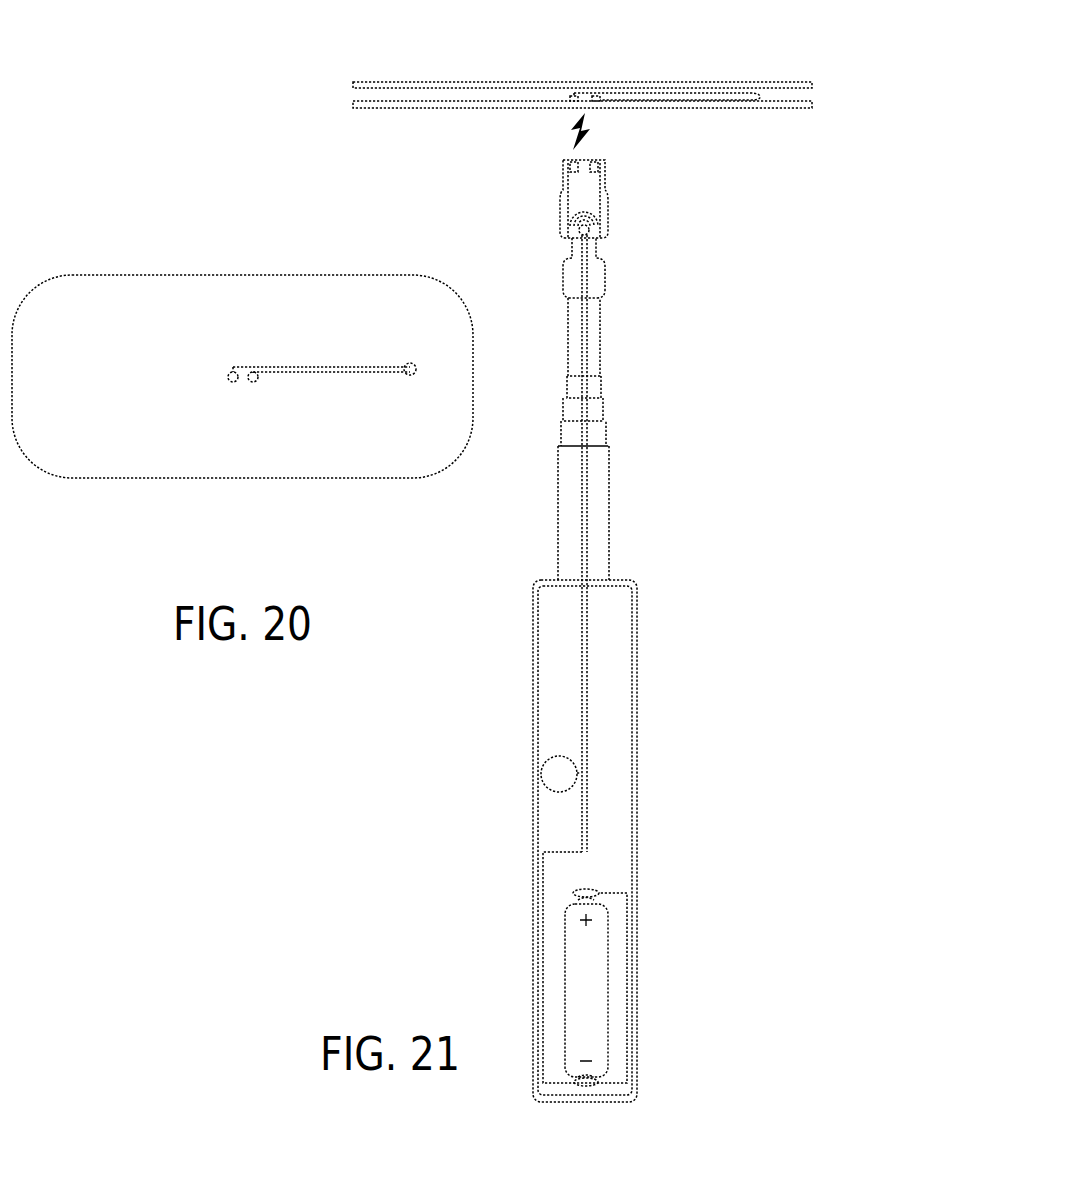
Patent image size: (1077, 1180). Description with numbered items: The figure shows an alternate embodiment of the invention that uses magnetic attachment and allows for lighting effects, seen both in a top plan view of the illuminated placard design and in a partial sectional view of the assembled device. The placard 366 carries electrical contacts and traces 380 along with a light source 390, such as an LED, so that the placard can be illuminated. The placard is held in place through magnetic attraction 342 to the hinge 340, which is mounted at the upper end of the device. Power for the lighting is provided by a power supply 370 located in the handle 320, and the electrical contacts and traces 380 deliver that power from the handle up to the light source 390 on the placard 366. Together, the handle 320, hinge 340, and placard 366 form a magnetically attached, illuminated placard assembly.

In FIG. 21, the handle 320 is at (633, 703).
In FIG. 21, the hinge 340 is at (562, 222).
In FIG. 21, the magnetic attraction 342 is at (577, 183).
In FIG. 20, the placard 366 is at (103, 318).
In FIG. 21, the placard 366 is at (425, 82).
In FIG. 21, the power supply 370 is at (583, 1016).
In FIG. 20, the electrical contacts and traces 380 is at (253, 383).
In FIG. 21, the electrical contacts and traces 380 is at (596, 103).
In FIG. 20, the light source 390 is at (410, 377).
In FIG. 21, the light source 390 is at (755, 94).